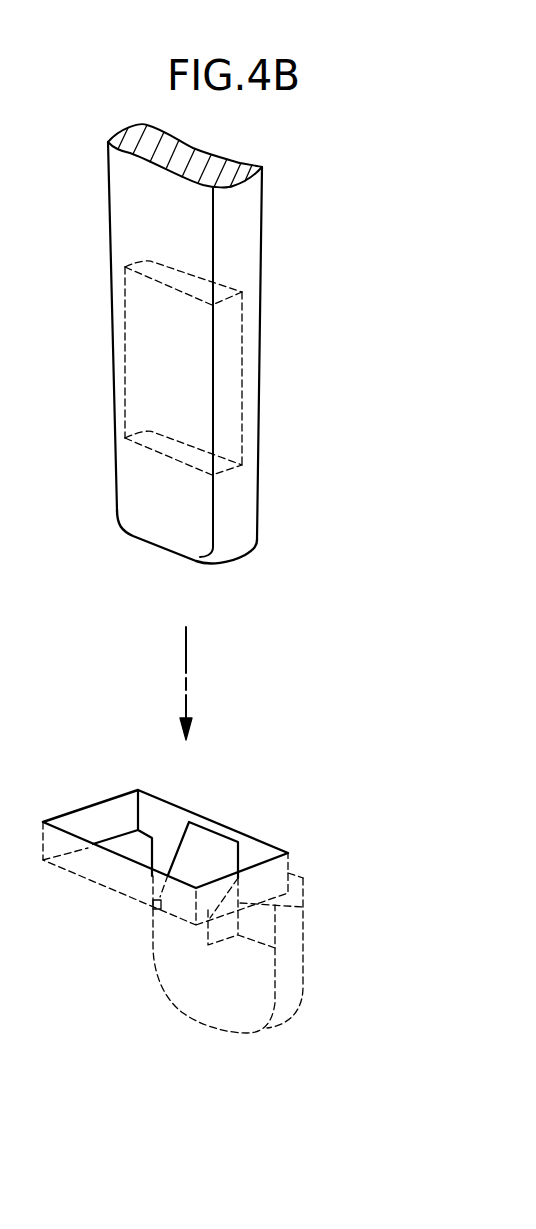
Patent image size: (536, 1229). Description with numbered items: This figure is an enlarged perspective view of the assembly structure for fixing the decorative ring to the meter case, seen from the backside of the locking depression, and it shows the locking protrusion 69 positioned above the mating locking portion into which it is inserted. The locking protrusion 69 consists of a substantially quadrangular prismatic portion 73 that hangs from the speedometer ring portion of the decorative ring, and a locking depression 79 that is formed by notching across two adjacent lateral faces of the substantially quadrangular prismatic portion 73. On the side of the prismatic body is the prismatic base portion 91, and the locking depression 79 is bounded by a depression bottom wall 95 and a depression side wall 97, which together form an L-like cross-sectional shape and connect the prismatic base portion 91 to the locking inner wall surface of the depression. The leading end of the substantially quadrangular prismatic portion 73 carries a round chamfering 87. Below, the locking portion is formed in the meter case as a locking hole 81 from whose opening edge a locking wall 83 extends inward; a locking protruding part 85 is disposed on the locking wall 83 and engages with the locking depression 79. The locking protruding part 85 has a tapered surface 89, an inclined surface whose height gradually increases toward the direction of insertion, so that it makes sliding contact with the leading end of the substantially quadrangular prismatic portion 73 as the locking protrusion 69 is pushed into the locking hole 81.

The locking protrusion 69 is at (196, 384).
The substantially quadrangular prismatic portion 73 is at (233, 483).
The locking depression 79 is at (165, 348).
The locking hole 81 is at (214, 885).
The locking wall 83 is at (290, 973).
The locking protruding part 85 is at (303, 907).
The round chamfering 87 is at (168, 552).
The tapered surface 89 is at (202, 846).
The prismatic base portion 91 is at (193, 215).
The depression bottom wall 95 is at (118, 352).
The depression side wall 97 is at (261, 343).